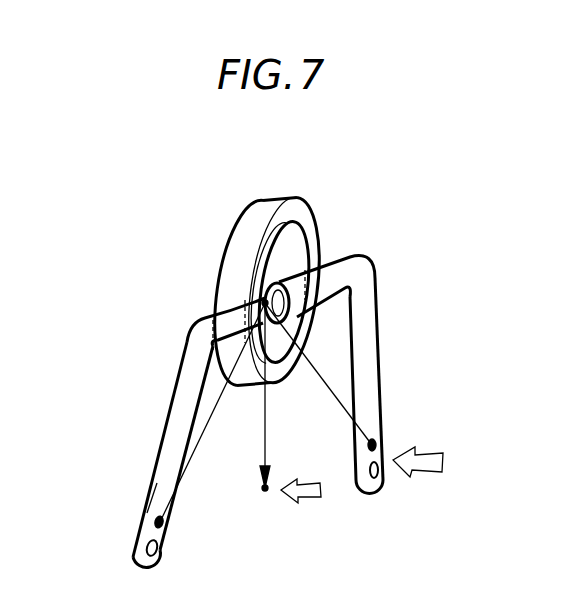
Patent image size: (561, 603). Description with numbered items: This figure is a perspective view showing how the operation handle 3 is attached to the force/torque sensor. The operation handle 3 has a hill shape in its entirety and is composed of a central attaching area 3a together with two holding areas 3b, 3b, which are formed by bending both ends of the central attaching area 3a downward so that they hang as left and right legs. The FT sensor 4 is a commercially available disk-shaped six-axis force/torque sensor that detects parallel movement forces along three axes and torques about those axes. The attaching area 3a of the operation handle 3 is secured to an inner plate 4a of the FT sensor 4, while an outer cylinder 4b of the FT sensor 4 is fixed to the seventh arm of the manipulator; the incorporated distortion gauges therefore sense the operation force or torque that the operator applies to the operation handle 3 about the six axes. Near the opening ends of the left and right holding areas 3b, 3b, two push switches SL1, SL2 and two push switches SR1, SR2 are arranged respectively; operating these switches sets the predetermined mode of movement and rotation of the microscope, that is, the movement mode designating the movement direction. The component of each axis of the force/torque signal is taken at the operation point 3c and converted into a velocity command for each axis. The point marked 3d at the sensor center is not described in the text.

The operation handle 3 is at (270, 381).
The central attaching area 3a is at (336, 265).
The holding area 3b is at (166, 438).
The operation point 3c is at (262, 488).
The wheel axle center 3d is at (259, 303).
The FT sensor 4 is at (245, 271).
The inner plate 4a is at (288, 250).
The outer cylinder 4b is at (238, 262).
The push switch SL1 is at (155, 521).
The push switch SL2 is at (146, 548).
The push switch SR1 is at (380, 444).
The push switch SR2 is at (375, 482).